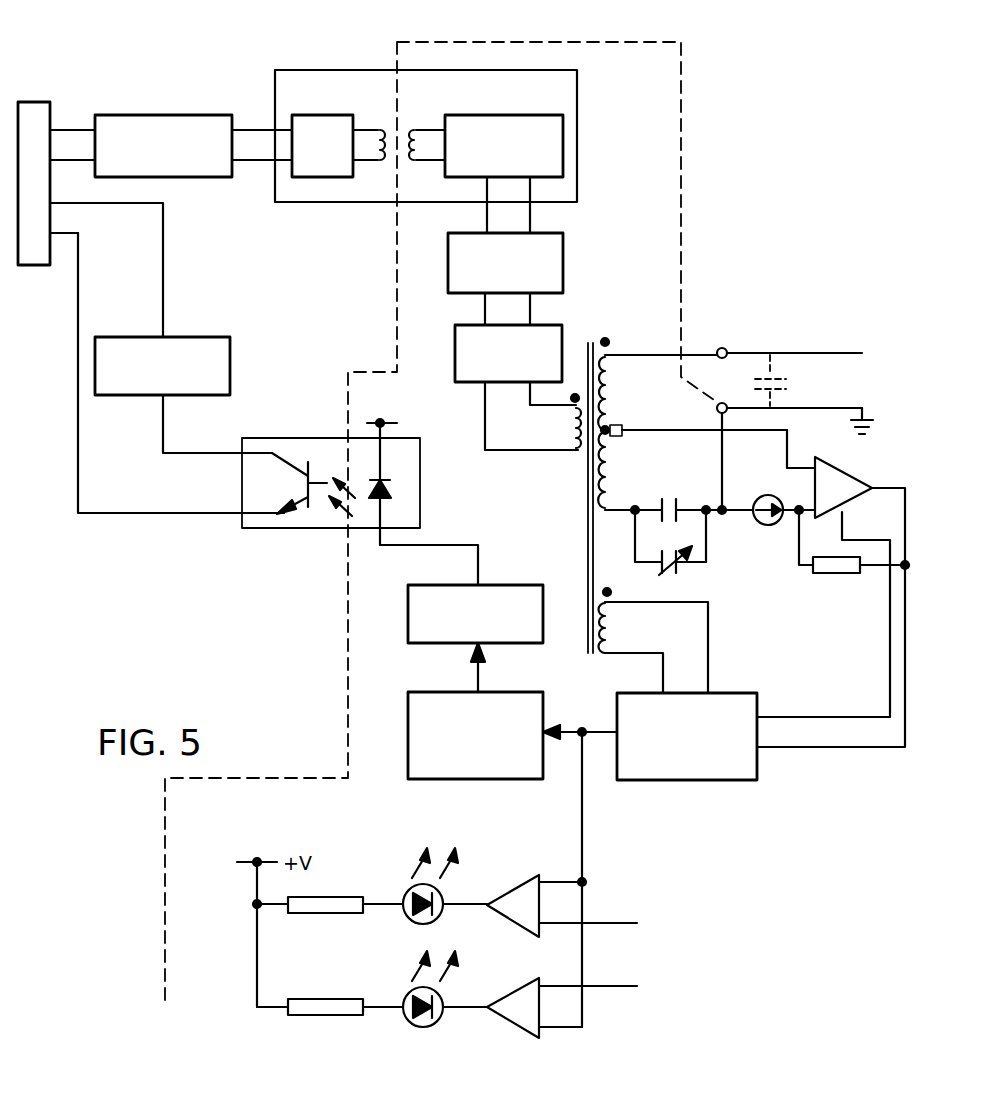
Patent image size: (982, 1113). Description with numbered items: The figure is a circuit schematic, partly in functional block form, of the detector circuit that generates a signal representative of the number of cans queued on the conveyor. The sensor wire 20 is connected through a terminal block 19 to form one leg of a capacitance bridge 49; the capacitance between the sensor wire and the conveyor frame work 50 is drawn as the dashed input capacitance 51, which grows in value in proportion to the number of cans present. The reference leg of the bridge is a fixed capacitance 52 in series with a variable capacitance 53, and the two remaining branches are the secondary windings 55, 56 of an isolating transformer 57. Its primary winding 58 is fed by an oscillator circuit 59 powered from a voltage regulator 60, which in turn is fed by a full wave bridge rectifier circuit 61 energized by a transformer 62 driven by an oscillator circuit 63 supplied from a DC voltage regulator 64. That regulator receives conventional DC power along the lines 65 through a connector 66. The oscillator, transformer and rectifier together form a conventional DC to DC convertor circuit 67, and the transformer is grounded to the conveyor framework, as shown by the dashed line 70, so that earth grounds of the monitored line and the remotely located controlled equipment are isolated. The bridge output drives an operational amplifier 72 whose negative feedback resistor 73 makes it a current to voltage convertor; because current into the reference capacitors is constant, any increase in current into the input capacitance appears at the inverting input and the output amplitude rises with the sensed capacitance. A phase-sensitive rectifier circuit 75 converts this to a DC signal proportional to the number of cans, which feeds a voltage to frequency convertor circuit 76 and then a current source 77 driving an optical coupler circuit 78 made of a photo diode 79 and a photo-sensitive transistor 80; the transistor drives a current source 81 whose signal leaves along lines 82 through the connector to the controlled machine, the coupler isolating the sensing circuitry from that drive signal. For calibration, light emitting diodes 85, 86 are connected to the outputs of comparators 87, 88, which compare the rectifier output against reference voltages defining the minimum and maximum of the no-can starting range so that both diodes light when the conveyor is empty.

The terminal block 19 is at (722, 348).
The sensor wire 20 is at (765, 336).
The capacitance bridge 49 is at (688, 462).
The frame work of the conveyor 50 is at (795, 410).
The input capacitance 51 is at (780, 372).
The fixed capacitance 52 is at (678, 506).
The variable capacitance 53 is at (682, 572).
The secondary winding 55 is at (612, 373).
The secondary winding 56 is at (692, 466).
The isolating transformer 57 is at (585, 322).
The primary winding 58 is at (572, 430).
The oscillator circuit 59 is at (455, 356).
The voltage regulator 60 is at (563, 272).
The full wave bridge rectifier circuit 61 is at (563, 158).
The transformer 62 is at (330, 205).
The oscillator circuit 63 is at (292, 172).
The DC voltage regulator 64 is at (200, 113).
The lines 65 is at (67, 128).
The connector 66 is at (45, 100).
The DC to DC convertor circuit 67 is at (577, 97).
The dashed line 70 is at (640, 40).
The operational amplifier 72 is at (838, 462).
The resistor 73 is at (832, 575).
The phase-sensitive rectifier circuit 75 is at (737, 693).
The voltage to frequency convertor circuit 76 is at (505, 692).
The current source 77 is at (504, 585).
The optical coupler circuit 78 is at (266, 553).
The photo diode 79 is at (392, 484).
The photo-sensitive transistor 80 is at (292, 522).
The current source 81 is at (190, 337).
The lines 82 is at (163, 313).
The light emitting diode 85 is at (406, 996).
The light emitting diode 86 is at (406, 893).
The comparator 87 is at (514, 985).
The comparator 88 is at (522, 878).